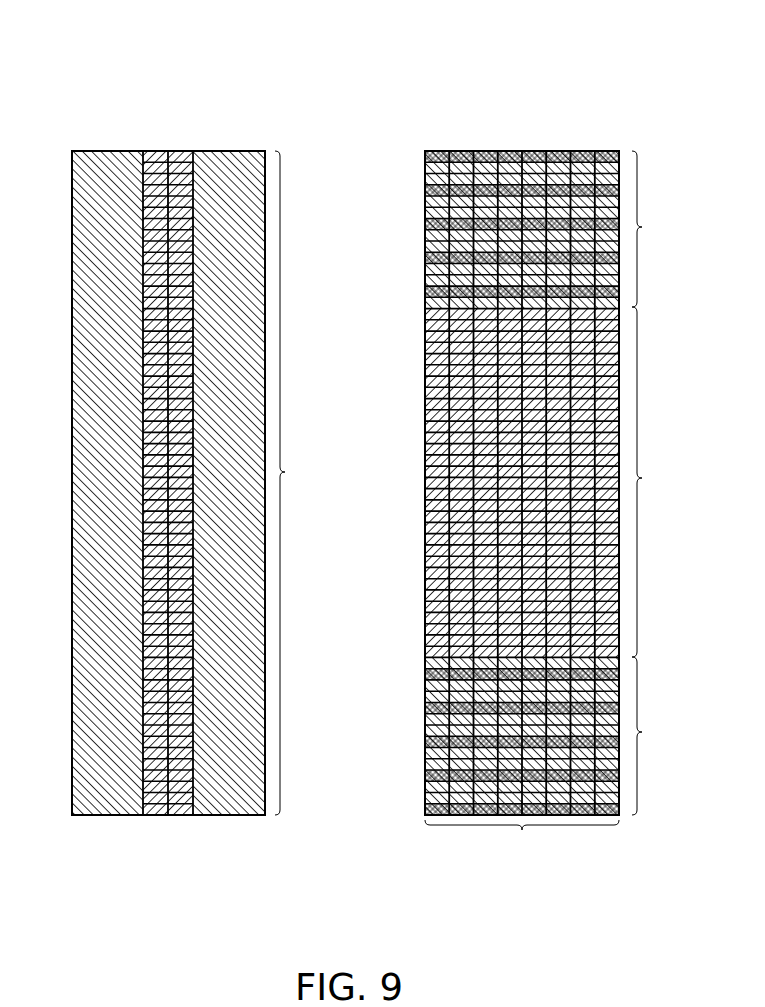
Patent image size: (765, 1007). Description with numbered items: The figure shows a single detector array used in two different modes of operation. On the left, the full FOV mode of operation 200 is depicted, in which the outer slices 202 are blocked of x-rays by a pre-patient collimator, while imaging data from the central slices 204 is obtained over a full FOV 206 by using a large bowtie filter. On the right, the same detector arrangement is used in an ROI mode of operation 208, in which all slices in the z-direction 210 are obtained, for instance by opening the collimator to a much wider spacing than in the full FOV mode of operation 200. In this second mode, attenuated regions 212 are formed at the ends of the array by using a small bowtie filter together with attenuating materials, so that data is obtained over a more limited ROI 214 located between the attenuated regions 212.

The full FOV mode of operation 200 is at (183, 79).
The outer slices 202 is at (106, 853).
The central slices 204 is at (169, 835).
The full FOV 206 is at (305, 483).
The ROI mode of operation 208 is at (537, 96).
The z-direction 210 is at (522, 843).
The attenuated regions 212 is at (558, 483).
The ROI 214 is at (558, 482).